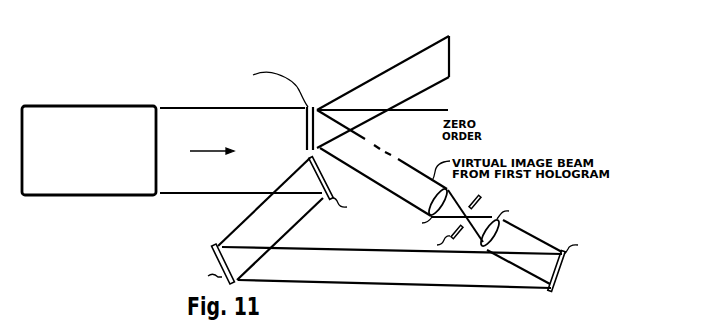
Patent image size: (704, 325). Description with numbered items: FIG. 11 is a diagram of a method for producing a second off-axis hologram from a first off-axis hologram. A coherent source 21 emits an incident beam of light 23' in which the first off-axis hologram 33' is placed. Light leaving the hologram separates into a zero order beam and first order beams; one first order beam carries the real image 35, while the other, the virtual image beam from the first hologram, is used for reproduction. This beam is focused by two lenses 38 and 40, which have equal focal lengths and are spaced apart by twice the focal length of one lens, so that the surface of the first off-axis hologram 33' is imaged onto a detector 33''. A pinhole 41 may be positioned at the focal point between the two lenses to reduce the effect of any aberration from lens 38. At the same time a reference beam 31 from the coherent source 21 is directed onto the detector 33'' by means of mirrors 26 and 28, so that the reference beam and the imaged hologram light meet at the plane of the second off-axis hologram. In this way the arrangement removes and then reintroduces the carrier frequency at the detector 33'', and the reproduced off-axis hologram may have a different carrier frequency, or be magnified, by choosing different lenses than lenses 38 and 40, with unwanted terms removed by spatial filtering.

The coherent source 21 is at (128, 105).
The incident beam of light 23' is at (241, 139).
The first off-axis hologram 33' is at (221, 110).
The real image first order beam 35 is at (433, 45).
The mirror 26 is at (326, 182).
The mirror 28 is at (215, 262).
The reference beam 31 is at (373, 283).
The lens 38 is at (430, 196).
The pinhole 41 is at (463, 180).
The lens 40 is at (498, 234).
The detector 33'' is at (603, 274).